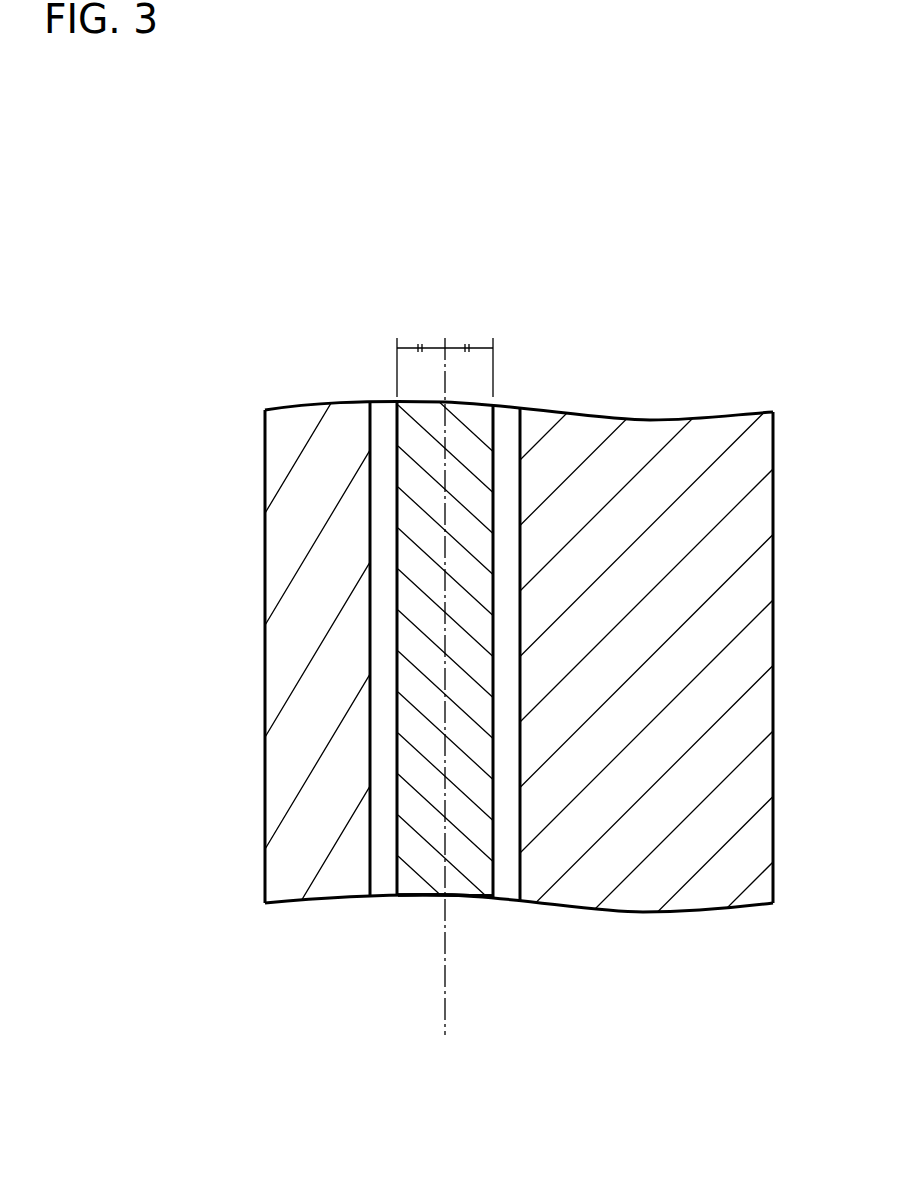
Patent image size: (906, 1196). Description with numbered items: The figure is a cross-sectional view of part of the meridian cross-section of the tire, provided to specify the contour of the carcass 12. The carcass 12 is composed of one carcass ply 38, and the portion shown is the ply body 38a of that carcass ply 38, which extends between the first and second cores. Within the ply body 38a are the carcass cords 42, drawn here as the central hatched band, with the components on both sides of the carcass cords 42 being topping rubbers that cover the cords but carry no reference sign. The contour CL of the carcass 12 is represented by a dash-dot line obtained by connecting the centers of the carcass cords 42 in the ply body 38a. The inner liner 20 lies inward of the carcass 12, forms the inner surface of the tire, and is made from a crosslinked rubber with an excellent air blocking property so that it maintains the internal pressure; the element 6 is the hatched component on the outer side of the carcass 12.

The inner liner 20 is at (303, 427).
The second member (hatched section) 6 is at (640, 440).
The carcass cords 42 is at (460, 882).
The ply body 38a is at (413, 905).
The carcass ply 38 is at (425, 959).
The carcass 12 is at (425, 977).
The contour of the carcass CL is at (446, 1012).